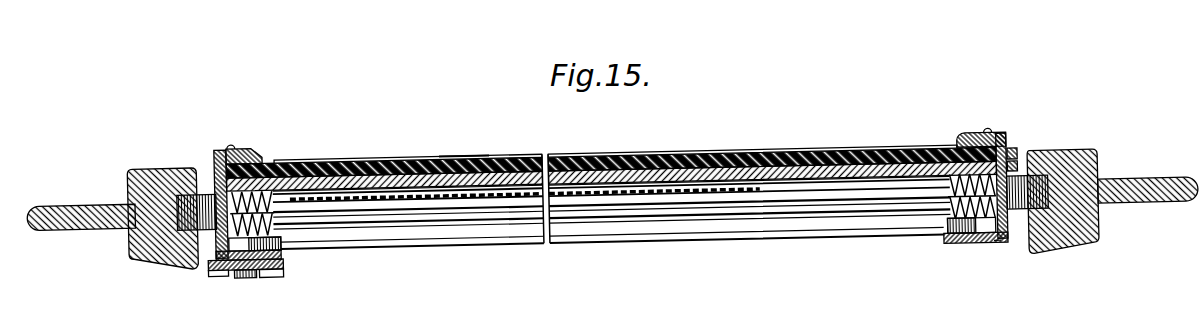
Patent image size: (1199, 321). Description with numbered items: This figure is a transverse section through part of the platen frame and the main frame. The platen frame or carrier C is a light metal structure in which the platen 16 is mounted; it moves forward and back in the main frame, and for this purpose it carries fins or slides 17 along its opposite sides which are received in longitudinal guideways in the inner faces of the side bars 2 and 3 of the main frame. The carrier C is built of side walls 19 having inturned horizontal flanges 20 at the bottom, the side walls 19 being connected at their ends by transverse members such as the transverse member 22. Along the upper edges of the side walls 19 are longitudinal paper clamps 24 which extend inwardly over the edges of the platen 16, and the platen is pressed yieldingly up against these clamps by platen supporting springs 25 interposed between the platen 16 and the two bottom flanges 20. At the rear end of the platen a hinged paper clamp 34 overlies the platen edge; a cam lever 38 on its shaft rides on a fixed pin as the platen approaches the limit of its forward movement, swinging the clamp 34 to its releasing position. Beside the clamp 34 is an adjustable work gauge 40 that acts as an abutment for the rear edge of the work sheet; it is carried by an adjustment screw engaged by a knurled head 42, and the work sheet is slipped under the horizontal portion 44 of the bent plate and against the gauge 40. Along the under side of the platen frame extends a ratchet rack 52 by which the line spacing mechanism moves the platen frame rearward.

The side bar 2 is at (63, 194).
The side bar 3 is at (1145, 194).
The fins or slides 17 is at (133, 177).
The side walls 19 is at (213, 154).
The longitudinal paper clamps 24 is at (241, 144).
The platen supporting springs 25 is at (280, 211).
The inturned horizontal flanges 20 is at (260, 244).
The ratchet rack 52 is at (208, 263).
The cam lever 38 is at (1018, 157).
The adjustable work gauge 40 is at (328, 145).
The knurled head 42 is at (368, 152).
The horizontal portion of the plate 44 is at (463, 152).
The platen 16 is at (680, 159).
The hinged paper clamp 34 is at (762, 156).
The transverse member 22 is at (635, 231).
The platen frame or carrier C is at (993, 249).